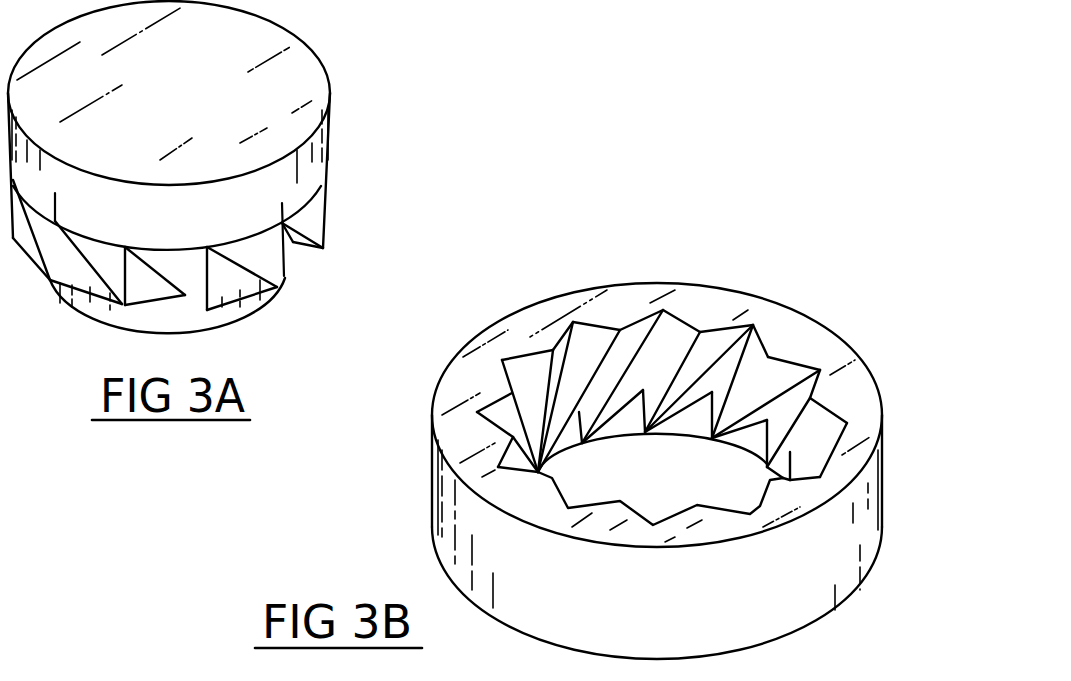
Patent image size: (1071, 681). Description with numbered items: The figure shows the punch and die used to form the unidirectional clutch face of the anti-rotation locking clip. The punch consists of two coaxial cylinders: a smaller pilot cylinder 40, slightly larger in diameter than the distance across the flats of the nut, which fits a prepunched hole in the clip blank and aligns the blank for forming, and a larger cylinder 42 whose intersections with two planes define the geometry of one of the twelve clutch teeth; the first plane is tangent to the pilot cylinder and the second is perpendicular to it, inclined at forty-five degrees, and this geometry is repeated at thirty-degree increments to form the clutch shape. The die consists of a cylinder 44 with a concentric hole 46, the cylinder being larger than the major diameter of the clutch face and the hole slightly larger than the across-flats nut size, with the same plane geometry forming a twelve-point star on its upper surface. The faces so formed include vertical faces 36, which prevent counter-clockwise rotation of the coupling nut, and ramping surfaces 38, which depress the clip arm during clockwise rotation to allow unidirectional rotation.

In FIG. 3B, the vertical faces 36 is at (555, 348).
In FIG. 3B, the 45 degree ramping surface 38 is at (598, 340).
In FIG. 3A, the pilot cylinder 40 is at (268, 302).
In FIG. 3A, the cylinder 42 is at (333, 142).
In FIG. 3B, the cylinder 44 is at (432, 490).
In FIG. 3B, the concentric hole 46 is at (672, 494).